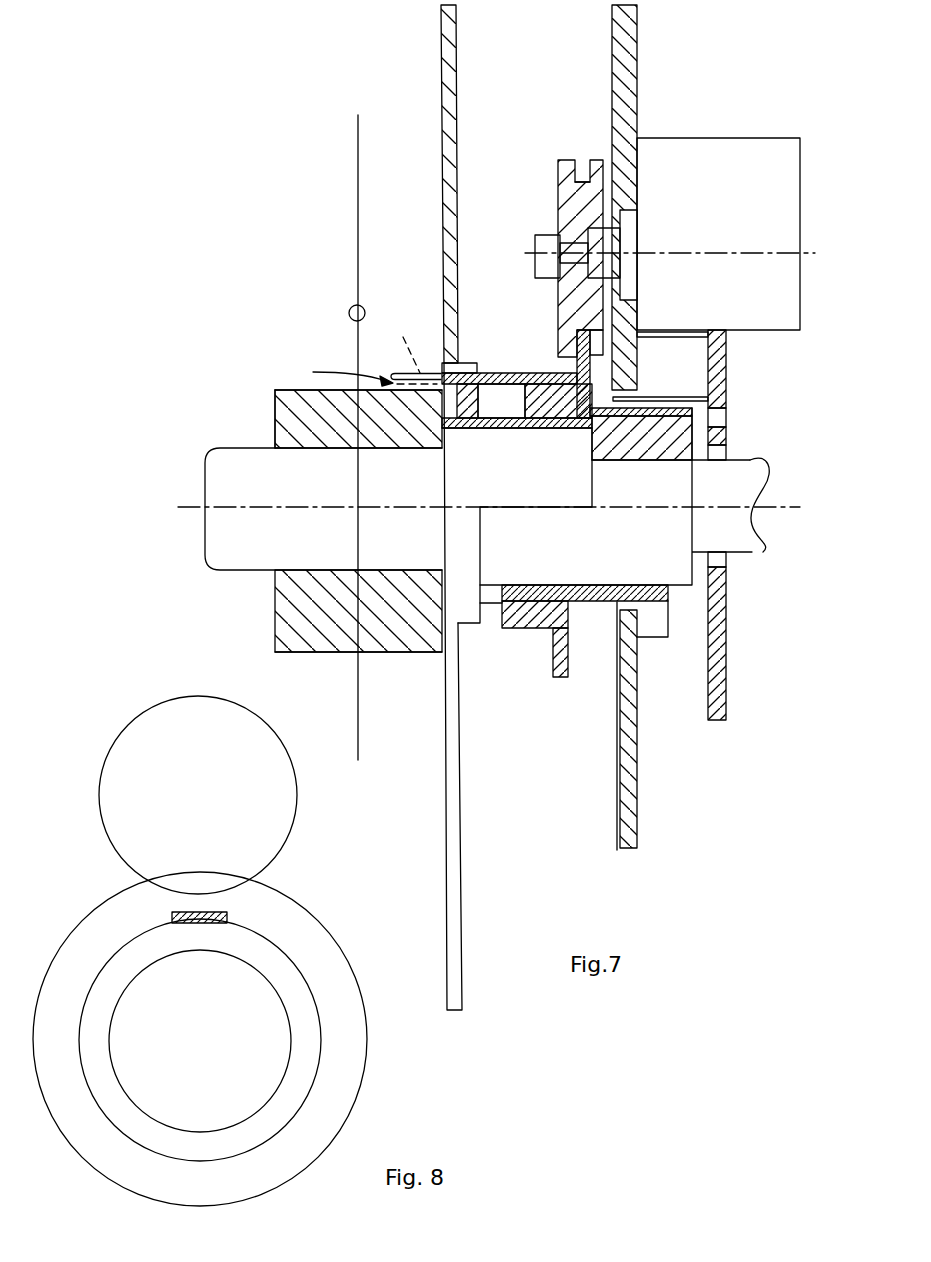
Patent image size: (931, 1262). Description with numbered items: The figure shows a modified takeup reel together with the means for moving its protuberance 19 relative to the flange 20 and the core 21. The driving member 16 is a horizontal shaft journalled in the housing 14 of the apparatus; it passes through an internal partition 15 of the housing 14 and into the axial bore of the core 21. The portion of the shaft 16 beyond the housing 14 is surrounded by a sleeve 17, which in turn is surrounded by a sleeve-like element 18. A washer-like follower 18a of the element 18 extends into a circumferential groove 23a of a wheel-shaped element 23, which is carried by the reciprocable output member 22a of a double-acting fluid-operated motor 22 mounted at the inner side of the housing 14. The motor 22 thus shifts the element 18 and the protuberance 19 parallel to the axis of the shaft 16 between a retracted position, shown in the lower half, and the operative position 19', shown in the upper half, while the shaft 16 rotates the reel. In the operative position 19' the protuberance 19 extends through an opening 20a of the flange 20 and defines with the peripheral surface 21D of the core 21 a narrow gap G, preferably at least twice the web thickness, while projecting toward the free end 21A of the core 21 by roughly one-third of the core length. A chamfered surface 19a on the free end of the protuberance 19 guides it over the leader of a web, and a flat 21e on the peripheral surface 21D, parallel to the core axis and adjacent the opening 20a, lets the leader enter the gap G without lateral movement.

In FIG. 7, the housing 14 is at (637, 805).
In FIG. 7, the internal partition 15 is at (724, 670).
In FIG. 7, the driving member 16 is at (748, 538).
In FIG. 7, the sleeve 17 is at (666, 433).
In FIG. 7, the sleeve-like element 18 is at (563, 610).
In FIG. 8, the sleeve-like element 18 is at (288, 980).
In FIG. 7, the washer-like follower 18a is at (553, 667).
In FIG. 8, the washer-like follower 18a is at (340, 1088).
In FIG. 7, the protuberance 19 is at (517, 369).
In FIG. 8, the protuberance 19 is at (250, 896).
In FIG. 7, the chamfered surface 19a is at (393, 374).
In FIG. 7, the operative position of the protuberance 19' is at (415, 347).
In FIG. 7, the flange 20 is at (455, 712).
In FIG. 7, the opening 20a is at (448, 364).
In FIG. 7, the core 21 is at (303, 602).
In FIG. 7, the free end of the core 21A is at (273, 418).
In FIG. 7, the flat 21e is at (283, 390).
In FIG. 7, the peripheral surface of the core 21D is at (305, 656).
In FIG. 7, the fluid-operated motor 22 is at (768, 312).
In FIG. 7, the output member 22a is at (552, 232).
In FIG. 7, the wheel-shaped element 23 is at (596, 162).
In FIG. 8, the wheel-shaped element 23 is at (272, 835).
In FIG. 7, the circumferential groove 23a is at (581, 161).
In FIG. 7, the gap G is at (345, 372).